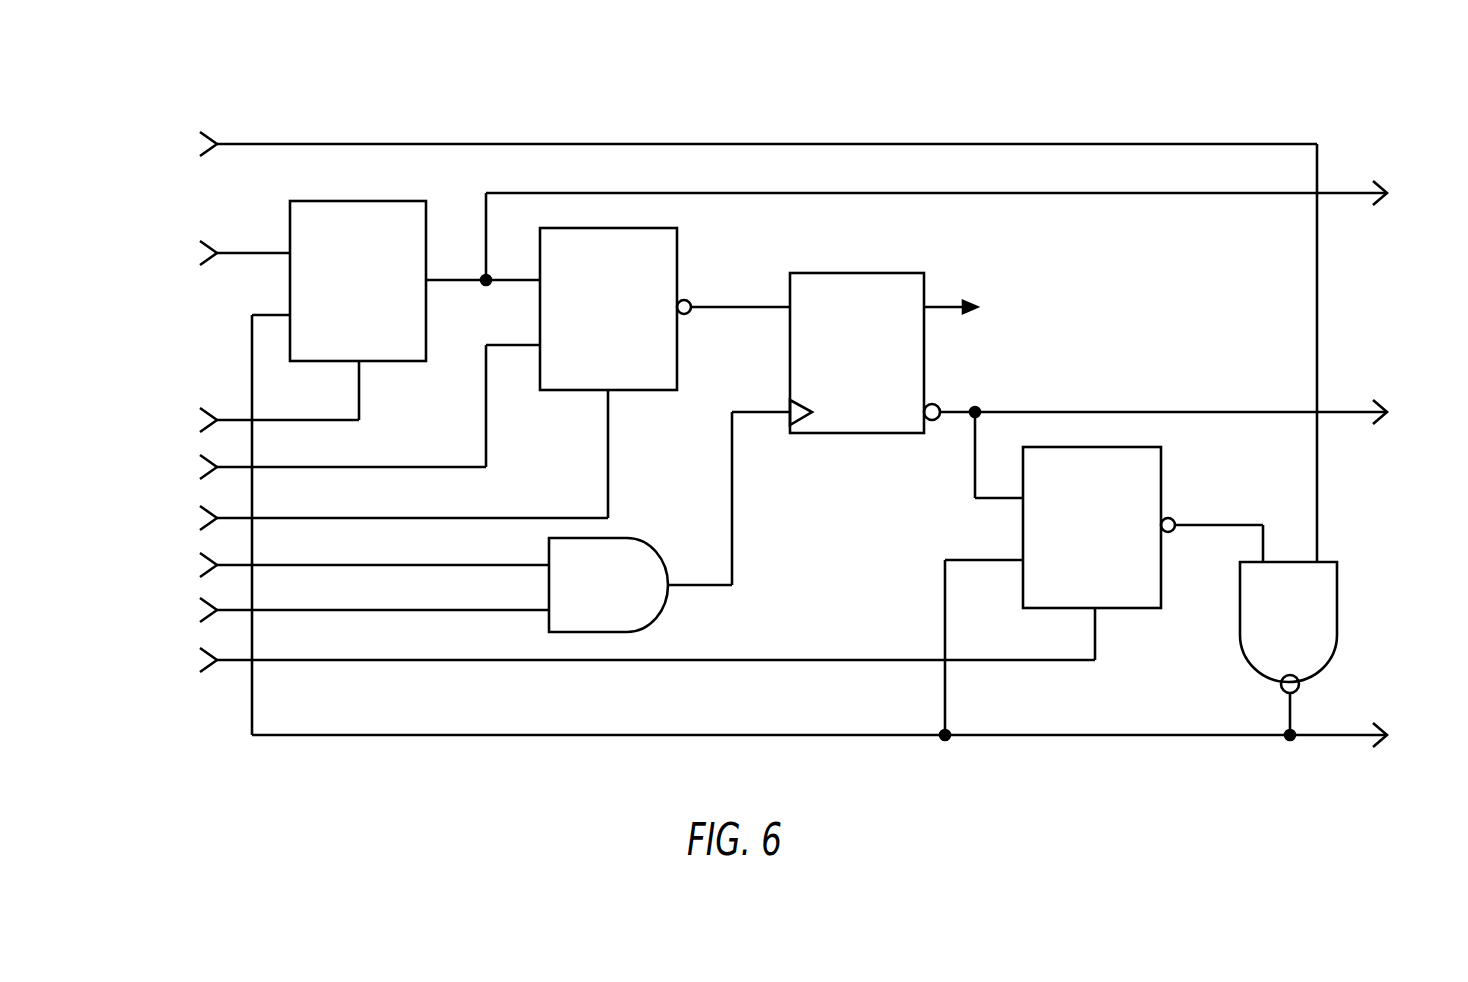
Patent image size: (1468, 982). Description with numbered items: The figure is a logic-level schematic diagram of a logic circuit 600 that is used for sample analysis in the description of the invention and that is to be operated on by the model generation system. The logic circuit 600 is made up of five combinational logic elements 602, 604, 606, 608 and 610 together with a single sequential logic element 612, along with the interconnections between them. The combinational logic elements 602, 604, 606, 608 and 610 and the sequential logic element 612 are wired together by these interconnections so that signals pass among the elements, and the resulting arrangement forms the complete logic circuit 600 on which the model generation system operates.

The logic circuit 600 is at (1100, 90).
The combinational logic element 602 is at (393, 201).
The combinational logic element 604 is at (677, 258).
The combinational logic element 606 is at (657, 612).
The combinational logic element 608 is at (1161, 480).
The combinational logic element 610 is at (1248, 655).
The sequential logic element 612 is at (848, 273).